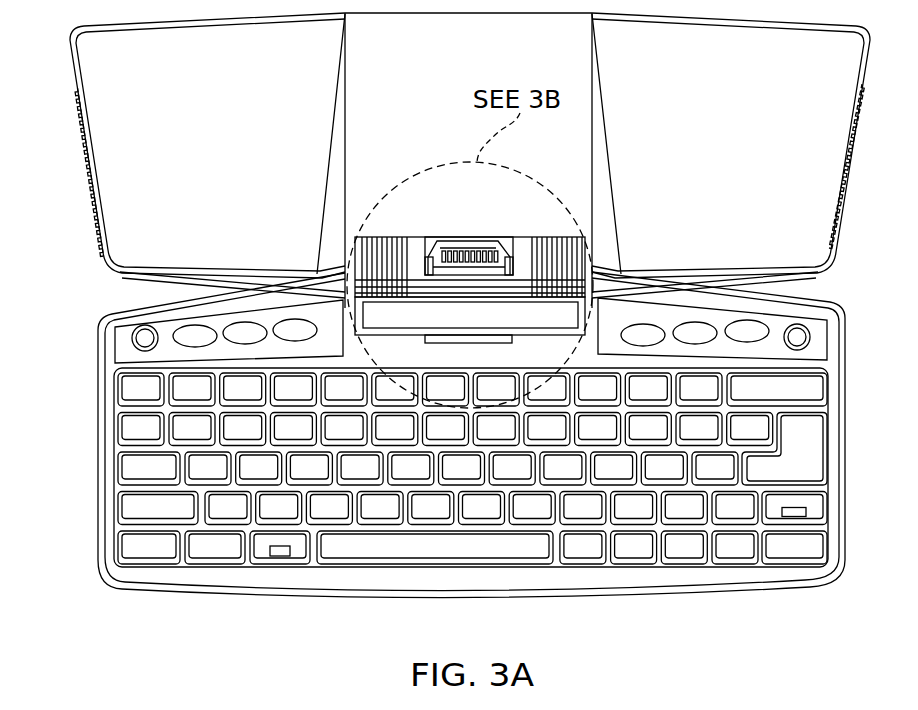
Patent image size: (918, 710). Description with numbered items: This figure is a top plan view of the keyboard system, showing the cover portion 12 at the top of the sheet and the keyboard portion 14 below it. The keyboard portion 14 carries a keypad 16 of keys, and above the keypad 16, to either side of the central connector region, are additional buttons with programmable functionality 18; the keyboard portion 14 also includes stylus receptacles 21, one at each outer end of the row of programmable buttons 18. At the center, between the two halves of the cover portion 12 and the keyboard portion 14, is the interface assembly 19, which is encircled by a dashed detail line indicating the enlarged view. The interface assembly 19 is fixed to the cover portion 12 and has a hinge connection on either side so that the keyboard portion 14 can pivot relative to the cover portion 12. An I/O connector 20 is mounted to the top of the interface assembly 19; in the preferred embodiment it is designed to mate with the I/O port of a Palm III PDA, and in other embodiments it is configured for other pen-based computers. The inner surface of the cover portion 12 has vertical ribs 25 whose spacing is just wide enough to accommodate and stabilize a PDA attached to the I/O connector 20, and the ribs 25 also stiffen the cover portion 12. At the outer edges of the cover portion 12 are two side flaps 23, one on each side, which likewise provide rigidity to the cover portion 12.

The cover portion 12 is at (419, 66).
The keyboard portion 14 is at (79, 462).
The keypad 16 is at (513, 472).
The buttons with programmable functionality 18 is at (252, 335).
The interface assembly 19 is at (532, 243).
The I/O connector 20 is at (475, 250).
The stylus receptacle 21 is at (132, 340).
The side flap 23 is at (75, 138).
The vertical ribs 25 is at (330, 154).